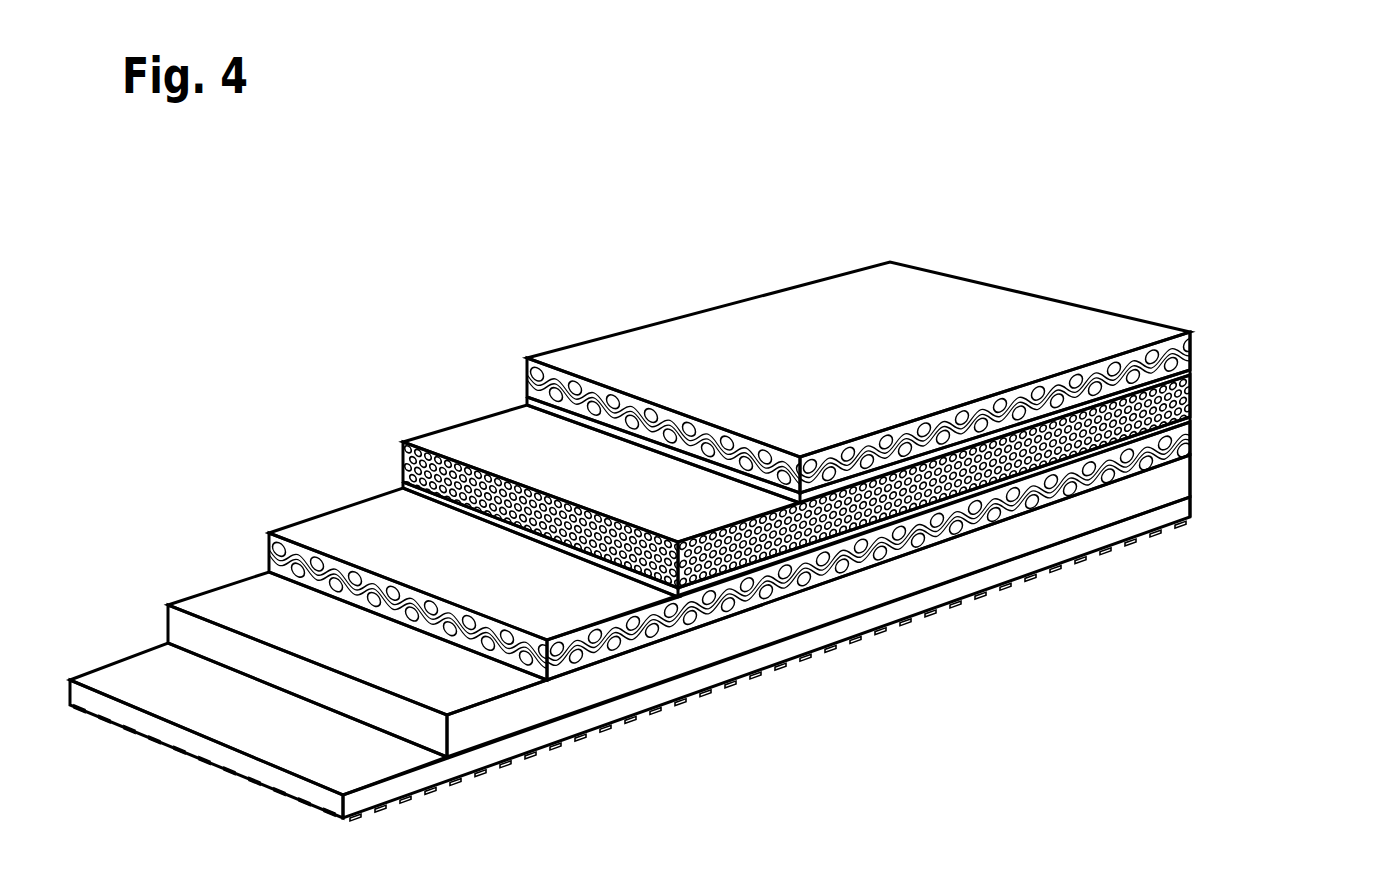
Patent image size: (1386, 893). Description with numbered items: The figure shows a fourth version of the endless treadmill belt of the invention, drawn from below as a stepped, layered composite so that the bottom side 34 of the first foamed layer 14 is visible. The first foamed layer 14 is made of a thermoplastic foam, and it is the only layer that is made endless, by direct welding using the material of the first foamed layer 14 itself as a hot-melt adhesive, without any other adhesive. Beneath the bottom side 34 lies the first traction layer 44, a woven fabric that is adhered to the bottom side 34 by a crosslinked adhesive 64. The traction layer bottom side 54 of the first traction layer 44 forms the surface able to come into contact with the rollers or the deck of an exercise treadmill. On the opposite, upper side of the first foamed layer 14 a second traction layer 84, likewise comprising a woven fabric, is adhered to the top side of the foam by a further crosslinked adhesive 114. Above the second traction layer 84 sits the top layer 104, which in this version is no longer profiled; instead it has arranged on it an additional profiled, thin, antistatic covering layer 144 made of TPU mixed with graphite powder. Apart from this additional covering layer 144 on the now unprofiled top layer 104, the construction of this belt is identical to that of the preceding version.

The first foamed layer 14 is at (453, 448).
The bottom side 34 is at (795, 494).
The first traction layer 44 is at (952, 408).
The traction layer bottom side 54 is at (712, 352).
The crosslinked adhesive 64 is at (1190, 373).
The second traction layer 84 is at (357, 527).
The top layer 104 is at (242, 597).
The crosslinked adhesive 114 is at (1190, 418).
The antistatic covering layer 144 is at (142, 680).